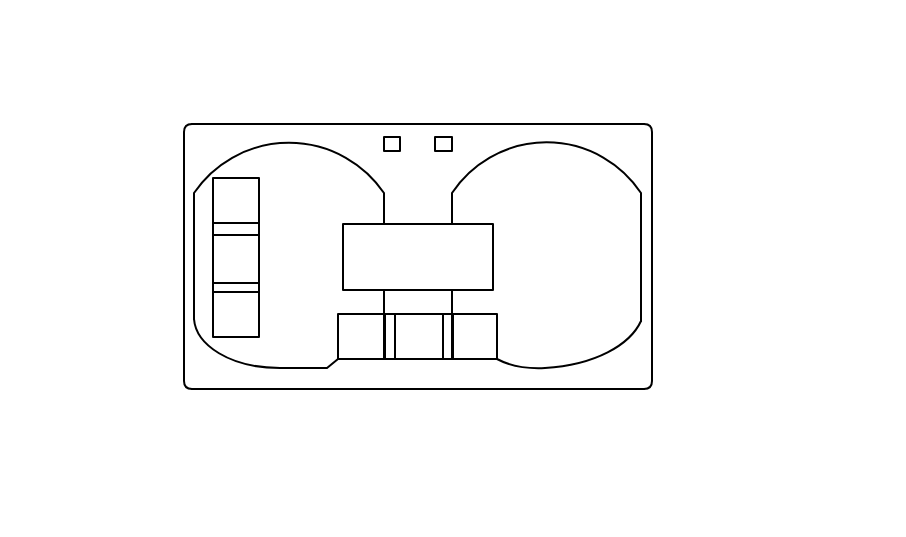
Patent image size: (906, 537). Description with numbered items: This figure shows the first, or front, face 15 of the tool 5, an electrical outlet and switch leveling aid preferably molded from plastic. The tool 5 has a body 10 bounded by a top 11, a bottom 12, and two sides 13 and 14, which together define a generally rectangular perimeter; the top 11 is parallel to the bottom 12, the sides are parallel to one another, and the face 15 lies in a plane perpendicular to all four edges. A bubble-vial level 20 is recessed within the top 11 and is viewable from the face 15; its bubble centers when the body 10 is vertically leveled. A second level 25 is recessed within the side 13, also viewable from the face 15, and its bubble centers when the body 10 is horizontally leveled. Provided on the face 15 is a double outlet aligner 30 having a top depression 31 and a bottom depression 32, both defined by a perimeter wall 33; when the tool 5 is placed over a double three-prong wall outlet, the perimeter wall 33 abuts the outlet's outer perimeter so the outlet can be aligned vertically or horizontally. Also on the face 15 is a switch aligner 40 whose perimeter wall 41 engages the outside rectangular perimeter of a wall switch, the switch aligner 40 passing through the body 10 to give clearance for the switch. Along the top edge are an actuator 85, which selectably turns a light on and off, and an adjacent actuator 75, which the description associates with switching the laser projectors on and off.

The tool 5 is at (158, 446).
The body 10 is at (227, 124).
The top 11 is at (183, 240).
The bottom 12 is at (652, 235).
The side 13 is at (515, 390).
The side 14 is at (493, 124).
The face 15 is at (448, 375).
The level 20 is at (233, 259).
The level 25 is at (407, 362).
The double outlet aligner 30 is at (301, 333).
The top depression 31 is at (323, 365).
The bottom depression 32 is at (607, 262).
The perimeter wall 33 is at (610, 345).
The switch aligner 40 is at (443, 255).
The perimeter wall 41 is at (472, 288).
The first contact pad 75 is at (389, 137).
The actuator 85 is at (444, 137).